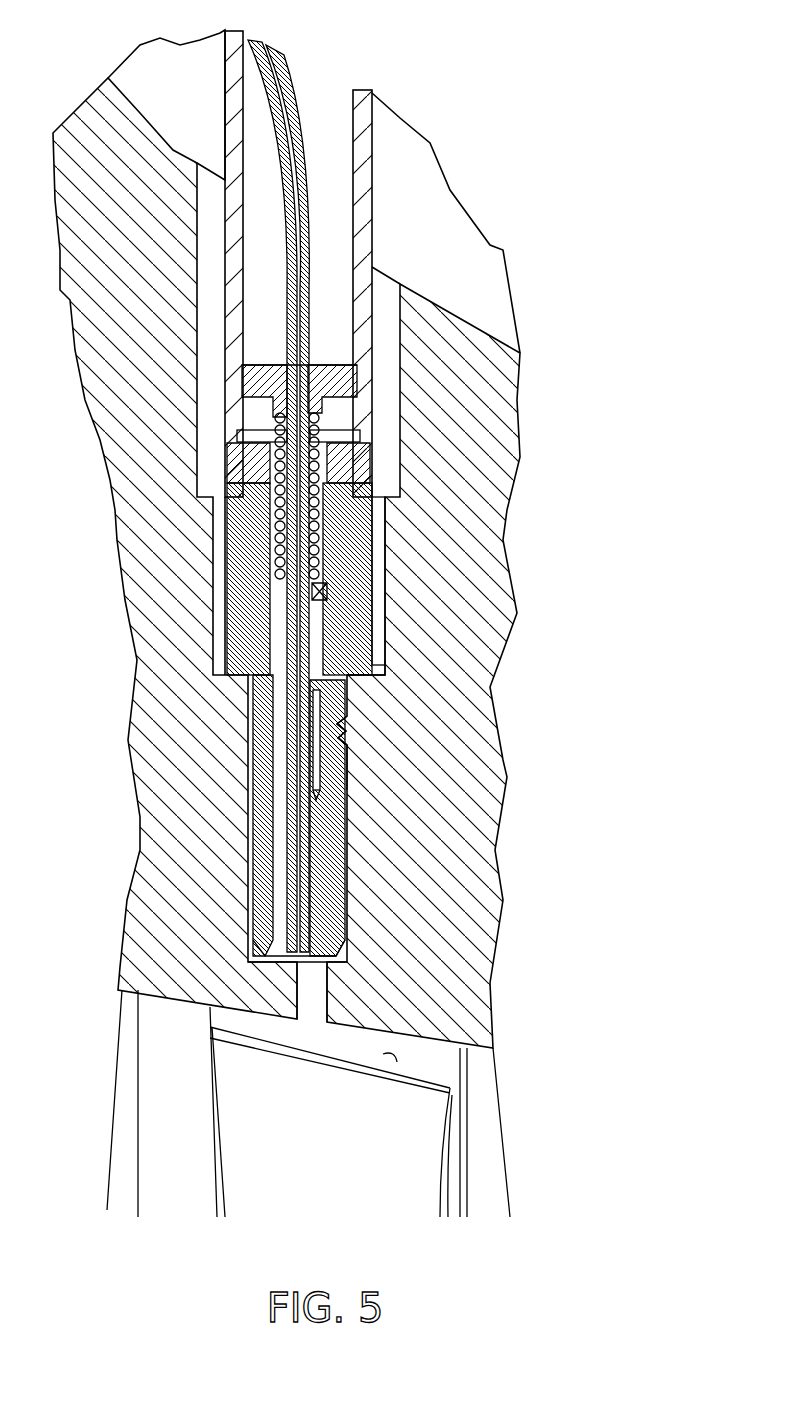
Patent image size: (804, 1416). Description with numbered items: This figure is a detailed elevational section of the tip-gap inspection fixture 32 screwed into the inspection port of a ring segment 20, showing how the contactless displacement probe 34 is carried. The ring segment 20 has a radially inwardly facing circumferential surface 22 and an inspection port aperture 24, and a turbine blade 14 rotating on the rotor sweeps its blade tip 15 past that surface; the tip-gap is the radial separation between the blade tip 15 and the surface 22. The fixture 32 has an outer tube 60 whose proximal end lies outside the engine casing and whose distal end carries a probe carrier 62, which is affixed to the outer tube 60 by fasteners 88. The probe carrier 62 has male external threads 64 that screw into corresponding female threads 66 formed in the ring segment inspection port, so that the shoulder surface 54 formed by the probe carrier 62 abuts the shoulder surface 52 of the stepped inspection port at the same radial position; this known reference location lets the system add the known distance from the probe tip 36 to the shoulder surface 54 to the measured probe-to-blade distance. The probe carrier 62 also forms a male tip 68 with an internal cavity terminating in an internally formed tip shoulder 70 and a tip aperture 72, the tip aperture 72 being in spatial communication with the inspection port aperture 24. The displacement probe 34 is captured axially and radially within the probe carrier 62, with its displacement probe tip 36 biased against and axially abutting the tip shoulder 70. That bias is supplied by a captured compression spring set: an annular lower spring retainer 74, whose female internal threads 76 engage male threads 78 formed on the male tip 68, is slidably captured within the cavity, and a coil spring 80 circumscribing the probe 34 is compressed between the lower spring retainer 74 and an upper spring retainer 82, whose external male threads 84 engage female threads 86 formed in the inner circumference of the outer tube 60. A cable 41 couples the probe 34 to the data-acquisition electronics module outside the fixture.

The turbine blade 14 is at (413, 1160).
The blade tip 15 is at (397, 1062).
The ring segment 20 is at (480, 840).
The inwardly facing circumferential surface 22 is at (452, 1090).
The inspection port aperture 24 is at (270, 1000).
The tip-gap inspection fixture 32 is at (400, 220).
The contactless displacement probe 34 is at (320, 827).
The displacement probe tip 36 is at (297, 962).
The cable 41 is at (290, 70).
The shoulder surface 52 is at (373, 702).
The shoulder surface 54 is at (348, 740).
The outer tube 60 is at (363, 152).
The probe carrier 62 is at (357, 547).
The tube holder 64 is at (248, 717).
The female threads 66 is at (349, 733).
The male tip 68 is at (325, 890).
The tip shoulder 70 is at (273, 913).
The tip aperture 72 is at (330, 967).
The lower spring retainer 74 is at (325, 597).
The female internal threads 76 is at (372, 607).
The male threads 78 is at (270, 607).
The coil spring 80 is at (240, 528).
The upper spring retainer 82 is at (333, 363).
The nut 84 is at (242, 373).
The female threads 86 is at (357, 393).
The fasteners 88 is at (233, 450).